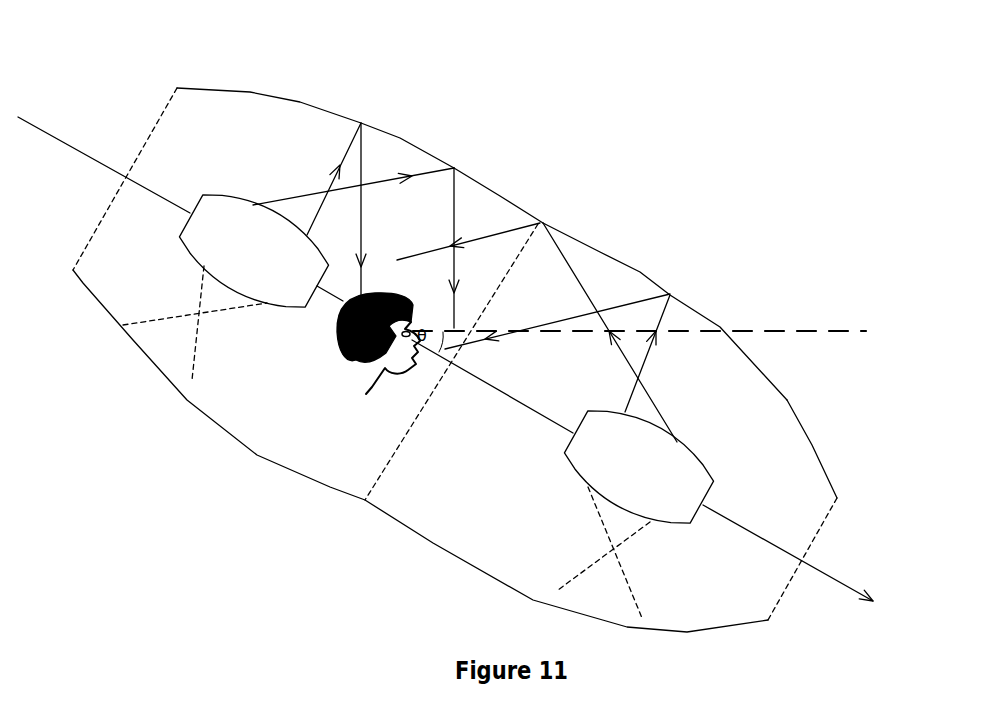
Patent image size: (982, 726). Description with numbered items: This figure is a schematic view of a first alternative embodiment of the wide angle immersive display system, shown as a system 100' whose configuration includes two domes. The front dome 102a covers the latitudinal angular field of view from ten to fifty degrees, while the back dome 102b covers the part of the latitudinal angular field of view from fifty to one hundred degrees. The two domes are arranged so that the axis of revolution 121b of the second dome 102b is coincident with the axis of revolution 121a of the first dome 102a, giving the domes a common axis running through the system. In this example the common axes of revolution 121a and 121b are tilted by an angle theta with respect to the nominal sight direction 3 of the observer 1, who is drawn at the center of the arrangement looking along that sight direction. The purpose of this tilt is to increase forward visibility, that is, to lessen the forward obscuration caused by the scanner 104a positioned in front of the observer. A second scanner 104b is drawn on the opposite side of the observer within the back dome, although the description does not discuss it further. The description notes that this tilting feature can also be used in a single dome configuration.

The system 100' is at (455, 359).
The front dome 102a is at (640, 272).
The back dome 102b is at (400, 138).
The scanner 104a is at (697, 485).
The lens 104b is at (216, 208).
The axis of revolution 121a is at (830, 573).
The axis of revolution 121b is at (65, 143).
The nominal sight direction 3 is at (767, 329).
The observer 1 is at (330, 355).